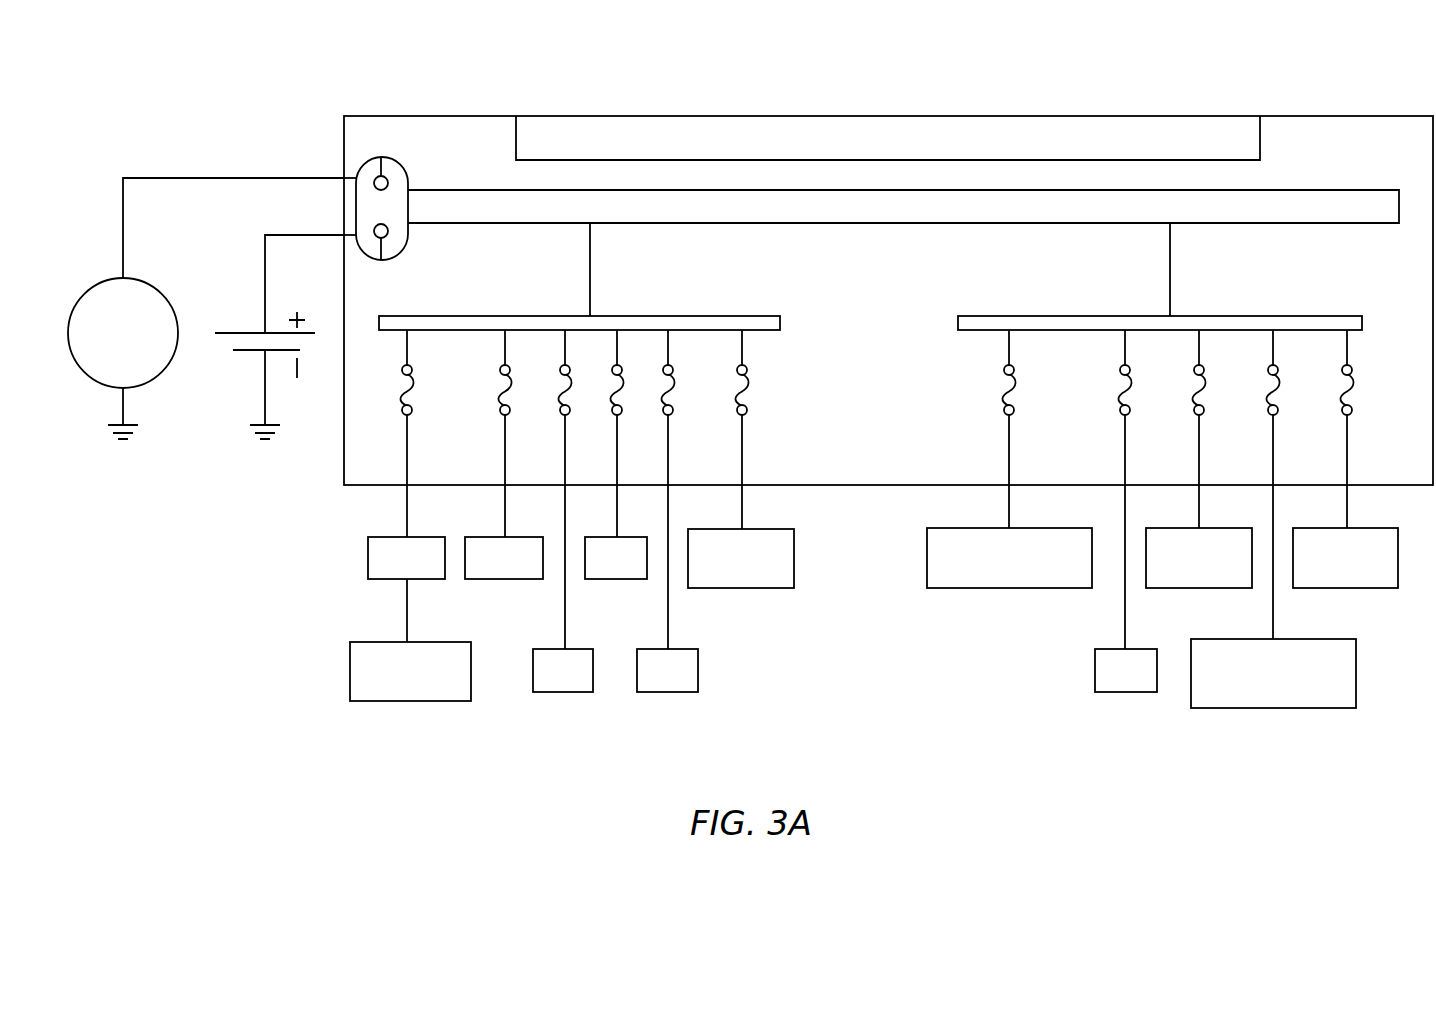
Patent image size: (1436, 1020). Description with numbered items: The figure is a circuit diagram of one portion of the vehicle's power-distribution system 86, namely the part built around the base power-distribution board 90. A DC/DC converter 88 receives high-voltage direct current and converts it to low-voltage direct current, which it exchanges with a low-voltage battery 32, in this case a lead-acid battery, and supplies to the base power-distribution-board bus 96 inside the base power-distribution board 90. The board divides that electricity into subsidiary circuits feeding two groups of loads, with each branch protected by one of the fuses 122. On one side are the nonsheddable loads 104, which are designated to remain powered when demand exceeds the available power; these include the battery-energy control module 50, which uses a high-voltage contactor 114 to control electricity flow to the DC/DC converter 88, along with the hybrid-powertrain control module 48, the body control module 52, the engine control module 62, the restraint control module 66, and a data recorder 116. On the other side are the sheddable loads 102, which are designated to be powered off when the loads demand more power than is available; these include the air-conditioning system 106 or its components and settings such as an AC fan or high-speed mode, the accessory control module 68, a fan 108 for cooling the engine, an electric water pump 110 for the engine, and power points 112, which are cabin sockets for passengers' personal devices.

The power-distribution system 86 is at (930, 70).
The DC/DC converter 88 is at (100, 281).
The low-voltage battery 32 is at (240, 353).
The base power-distribution board 90 is at (1377, 116).
The base power-distribution-board bus 96 is at (1340, 190).
The nonsheddable loads 104 is at (760, 316).
The sheddable loads 102 is at (1340, 316).
The fuses 122 is at (620, 391).
The battery-energy control module 50 is at (382, 580).
The hybrid-powertrain control module 48 is at (488, 580).
The body control module 52 is at (613, 580).
The data recorder 116 is at (768, 588).
The high-voltage contactor 114 is at (367, 701).
The engine control module 62 is at (548, 692).
The restraint control module 66 is at (653, 692).
The air-conditioning system 106 is at (945, 588).
The fan 108 is at (1190, 588).
The power points 112 is at (1342, 588).
The accessory control module 68 is at (1112, 692).
The electric water pump 110 is at (1222, 708).